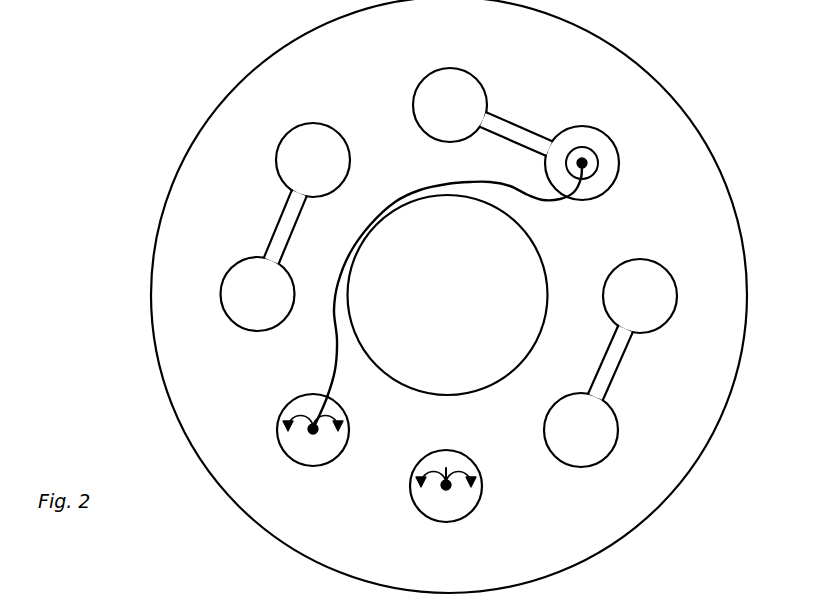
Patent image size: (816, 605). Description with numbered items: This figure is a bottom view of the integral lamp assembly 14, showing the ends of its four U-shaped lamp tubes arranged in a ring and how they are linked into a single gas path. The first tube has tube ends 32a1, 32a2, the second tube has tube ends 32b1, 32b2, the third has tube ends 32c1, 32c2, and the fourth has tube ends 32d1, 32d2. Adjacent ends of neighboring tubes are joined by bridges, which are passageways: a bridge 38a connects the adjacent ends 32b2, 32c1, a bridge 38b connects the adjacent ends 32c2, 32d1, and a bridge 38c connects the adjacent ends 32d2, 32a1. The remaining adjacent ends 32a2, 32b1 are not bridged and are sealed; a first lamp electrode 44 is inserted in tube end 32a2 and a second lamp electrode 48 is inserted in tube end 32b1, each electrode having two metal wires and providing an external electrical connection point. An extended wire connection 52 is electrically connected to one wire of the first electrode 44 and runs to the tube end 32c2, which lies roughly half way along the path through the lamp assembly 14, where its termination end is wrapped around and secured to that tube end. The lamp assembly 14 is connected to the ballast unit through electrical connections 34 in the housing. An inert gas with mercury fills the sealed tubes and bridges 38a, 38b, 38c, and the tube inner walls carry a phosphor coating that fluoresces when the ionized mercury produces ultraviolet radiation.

The lamp assembly 14 is at (208, 100).
The tube end 32d1 is at (455, 68).
The tube end 32d2 is at (313, 123).
The tube end 32c1 is at (637, 260).
The tube end 32c2 is at (620, 178).
The tube end 32a1 is at (237, 328).
The tube end 32a2 is at (281, 455).
The tube end 32b1 is at (478, 513).
The tube end 32b2 is at (573, 467).
The bridge 38a is at (617, 370).
The bridge 38b is at (532, 121).
The bridge 38c is at (277, 224).
The extended wire connection 52 is at (433, 182).
The electrical connections 34 is at (290, 423).
The first lamp electrode 44 is at (312, 469).
The second lamp electrode 48 is at (429, 512).